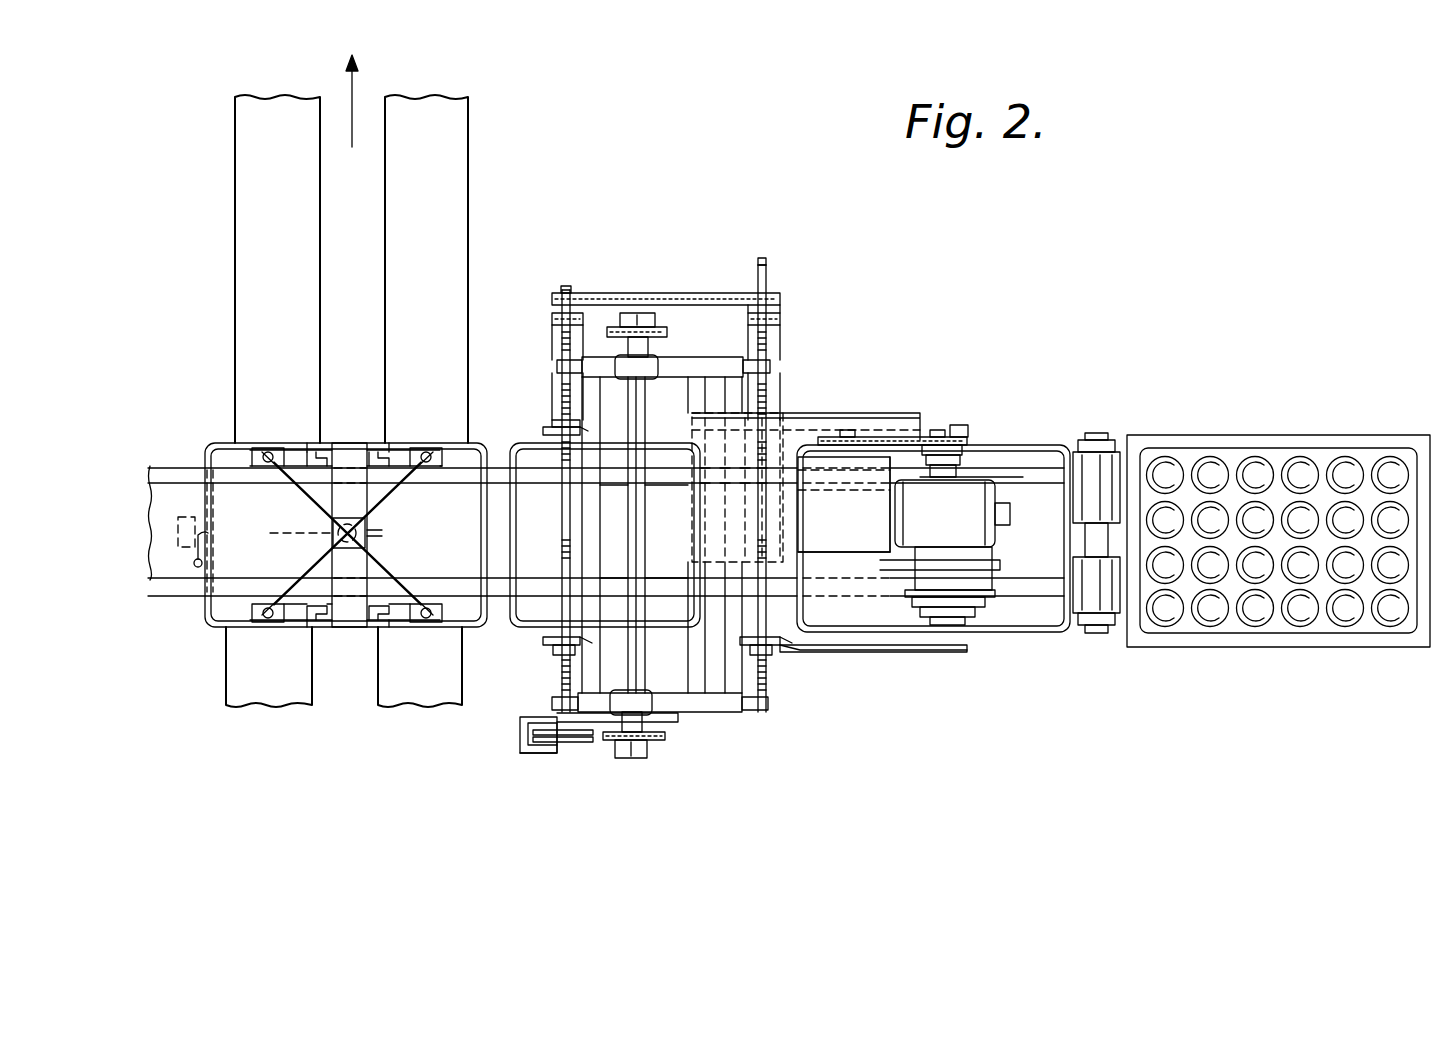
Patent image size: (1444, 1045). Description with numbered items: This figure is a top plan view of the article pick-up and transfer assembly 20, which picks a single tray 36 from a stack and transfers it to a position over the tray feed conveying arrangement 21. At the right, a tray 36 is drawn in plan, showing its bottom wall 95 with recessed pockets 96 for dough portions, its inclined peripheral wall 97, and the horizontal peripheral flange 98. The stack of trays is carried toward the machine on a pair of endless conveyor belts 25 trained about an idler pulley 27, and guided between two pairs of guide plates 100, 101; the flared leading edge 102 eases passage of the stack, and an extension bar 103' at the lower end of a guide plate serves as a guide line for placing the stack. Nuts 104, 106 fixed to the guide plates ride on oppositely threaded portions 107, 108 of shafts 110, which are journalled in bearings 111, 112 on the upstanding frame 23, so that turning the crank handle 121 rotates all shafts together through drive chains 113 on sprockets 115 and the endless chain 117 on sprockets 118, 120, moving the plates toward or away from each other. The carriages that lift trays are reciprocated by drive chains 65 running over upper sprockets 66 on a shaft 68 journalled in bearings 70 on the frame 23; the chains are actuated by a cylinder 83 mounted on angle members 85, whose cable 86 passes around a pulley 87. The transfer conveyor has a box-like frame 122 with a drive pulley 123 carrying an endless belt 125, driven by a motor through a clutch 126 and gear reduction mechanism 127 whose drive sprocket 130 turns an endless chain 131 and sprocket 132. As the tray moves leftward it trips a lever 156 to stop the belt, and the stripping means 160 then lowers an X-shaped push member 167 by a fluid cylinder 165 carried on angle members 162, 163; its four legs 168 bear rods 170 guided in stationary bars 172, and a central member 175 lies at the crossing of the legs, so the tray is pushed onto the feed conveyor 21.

The article pick-up and transfer assembly 20 is at (888, 325).
The tray feed conveying arrangement 21 is at (480, 142).
The upstanding frame 23 is at (720, 368).
The endless conveyor belts 25 is at (1075, 500).
The idler pulley 27 is at (1110, 443).
The tray 36 is at (437, 442).
The drive chains 65 is at (655, 328).
The upper sprockets 66 is at (610, 330).
The shaft 68 is at (638, 502).
The bearings 70 is at (655, 363).
The cylinder 83 is at (520, 740).
The angle members 85 is at (533, 715).
The cable 86 is at (578, 724).
The pulley 87 is at (560, 745).
The bottom wall 95 is at (1170, 620).
The pockets 96 is at (1300, 617).
The peripheral wall 97 is at (1345, 618).
The peripheral flange 98 is at (1415, 640).
The guide plates 100 is at (548, 437).
The guide plates 101 is at (562, 601).
The flared leading edge 102 is at (780, 414).
The extension bar 103' is at (904, 699).
The nuts 104 is at (543, 430).
The nuts 106 is at (553, 643).
The externally threaded portion 107 is at (561, 396).
The externally threaded portion 108 is at (557, 654).
The shafts 110 is at (588, 318).
The bearings 111 is at (557, 366).
The bearings 112 is at (550, 703).
The endless drive chains 113 is at (560, 338).
The sprockets 115 is at (554, 318).
The endless chain 117 is at (722, 296).
The sprocket 118 is at (782, 300).
The sprocket 120 is at (563, 296).
The crank handle 121 is at (763, 267).
The frame 122 is at (990, 562).
The drive pulley 123 is at (985, 600).
The endless belt 125 is at (853, 562).
The clutch 126 is at (817, 482).
The gear reduction mechanism 127 is at (870, 575).
The drive sprocket 130 is at (860, 437).
The endless chain 131 is at (940, 435).
The sprocket 132 is at (963, 450).
The lever 156 is at (222, 537).
The stripping means 160 is at (448, 512).
The angle member 162 is at (310, 452).
The angle member 163 is at (382, 456).
The fluid cylinder 165 is at (290, 519).
The push member 167 is at (268, 478).
The legs 168 is at (288, 454).
The rods 170 is at (270, 456).
The stationary bars 172 is at (215, 458).
The center bar 175 is at (382, 534).